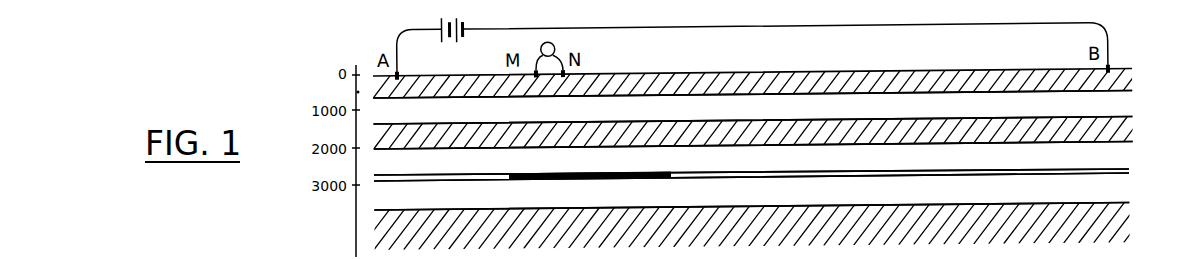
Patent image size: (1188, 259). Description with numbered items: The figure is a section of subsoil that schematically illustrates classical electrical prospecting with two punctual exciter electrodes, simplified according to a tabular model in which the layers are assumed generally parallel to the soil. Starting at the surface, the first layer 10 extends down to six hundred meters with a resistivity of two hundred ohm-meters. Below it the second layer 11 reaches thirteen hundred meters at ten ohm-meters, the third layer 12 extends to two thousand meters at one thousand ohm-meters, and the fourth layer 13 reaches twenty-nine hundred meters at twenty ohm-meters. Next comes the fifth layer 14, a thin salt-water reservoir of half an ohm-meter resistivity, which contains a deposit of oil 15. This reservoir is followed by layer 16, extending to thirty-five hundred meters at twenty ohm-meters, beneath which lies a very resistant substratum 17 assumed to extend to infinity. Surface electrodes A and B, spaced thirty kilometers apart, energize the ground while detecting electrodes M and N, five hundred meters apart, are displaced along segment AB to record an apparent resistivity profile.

The first layer 10 is at (1113, 85).
The second layer 11 is at (1112, 110).
The third layer 12 is at (1113, 135).
The fourth layer 13 is at (1112, 160).
The fifth layer 14 is at (1122, 177).
The deposit of oil 15 is at (528, 179).
The layer 16 is at (1107, 195).
The substratum 17 is at (1102, 243).